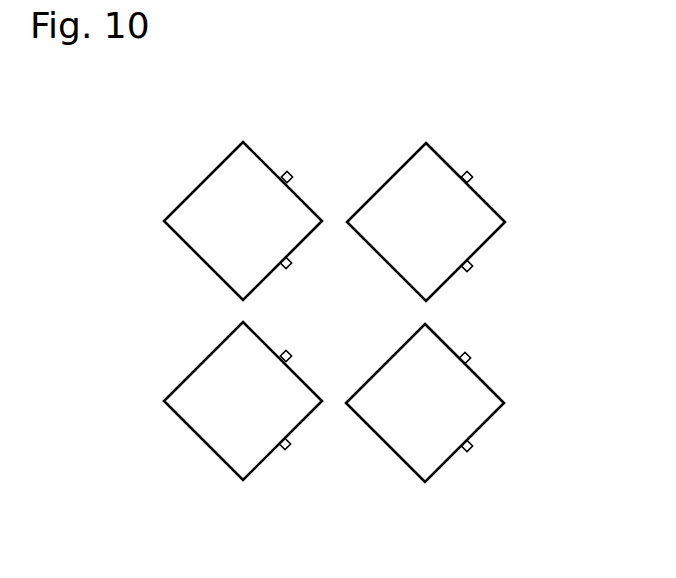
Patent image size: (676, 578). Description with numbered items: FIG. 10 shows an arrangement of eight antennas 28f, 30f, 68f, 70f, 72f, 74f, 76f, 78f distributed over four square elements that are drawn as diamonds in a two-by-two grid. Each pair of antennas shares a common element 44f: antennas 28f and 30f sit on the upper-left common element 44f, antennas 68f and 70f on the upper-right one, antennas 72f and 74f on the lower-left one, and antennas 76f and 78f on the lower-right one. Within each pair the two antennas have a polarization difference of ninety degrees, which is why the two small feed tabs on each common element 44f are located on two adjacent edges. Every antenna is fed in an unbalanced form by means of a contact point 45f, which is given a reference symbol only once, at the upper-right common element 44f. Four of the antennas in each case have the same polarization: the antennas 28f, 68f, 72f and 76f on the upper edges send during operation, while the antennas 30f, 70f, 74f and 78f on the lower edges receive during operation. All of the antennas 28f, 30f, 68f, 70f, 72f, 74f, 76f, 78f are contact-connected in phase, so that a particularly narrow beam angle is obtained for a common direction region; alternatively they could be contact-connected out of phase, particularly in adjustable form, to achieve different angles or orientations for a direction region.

The common element 44f is at (220, 183).
The antenna 28f is at (293, 169).
The antenna 30f is at (298, 270).
The antenna 68f is at (477, 167).
The contact point 45f is at (476, 173).
The antenna 70f is at (481, 269).
The antenna 72f is at (298, 349).
The antenna 74f is at (296, 457).
The antenna 76f is at (483, 354).
The antenna 78f is at (485, 455).